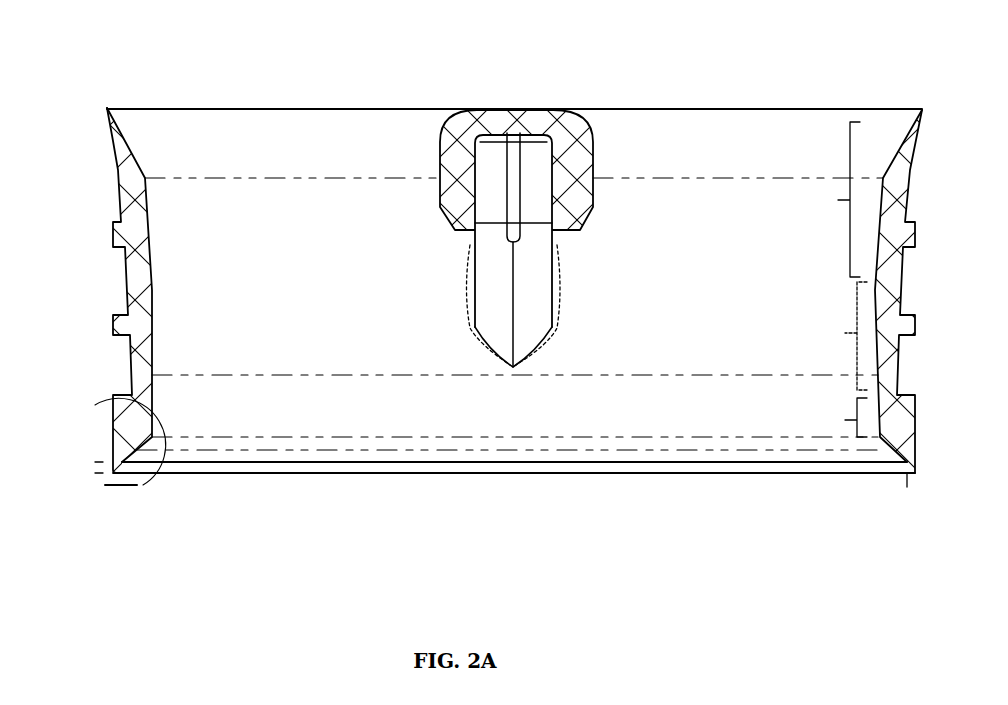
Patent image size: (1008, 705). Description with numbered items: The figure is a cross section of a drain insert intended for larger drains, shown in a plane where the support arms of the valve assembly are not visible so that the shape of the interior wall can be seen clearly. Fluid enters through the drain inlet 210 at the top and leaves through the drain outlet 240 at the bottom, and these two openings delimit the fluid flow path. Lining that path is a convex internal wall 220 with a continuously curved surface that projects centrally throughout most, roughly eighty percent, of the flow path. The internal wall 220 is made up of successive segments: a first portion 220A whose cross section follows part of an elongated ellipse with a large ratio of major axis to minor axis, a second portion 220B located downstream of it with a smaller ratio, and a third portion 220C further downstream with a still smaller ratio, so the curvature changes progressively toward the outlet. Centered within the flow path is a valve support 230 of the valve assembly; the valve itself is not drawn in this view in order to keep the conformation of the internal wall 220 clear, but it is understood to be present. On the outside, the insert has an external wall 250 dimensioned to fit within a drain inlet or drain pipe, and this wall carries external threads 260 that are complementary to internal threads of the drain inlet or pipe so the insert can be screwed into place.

The drain inlet 210 is at (343, 108).
The convex internal wall 220 is at (138, 145).
The first portion of the internal wall 220A is at (820, 199).
The second portion of the internal wall 220B is at (824, 336).
The third portion of the internal wall 220C is at (824, 417).
The valve support 230 is at (453, 220).
The drain outlet 240 is at (308, 473).
The external wall 250 is at (130, 272).
The external threads 260 is at (113, 237).